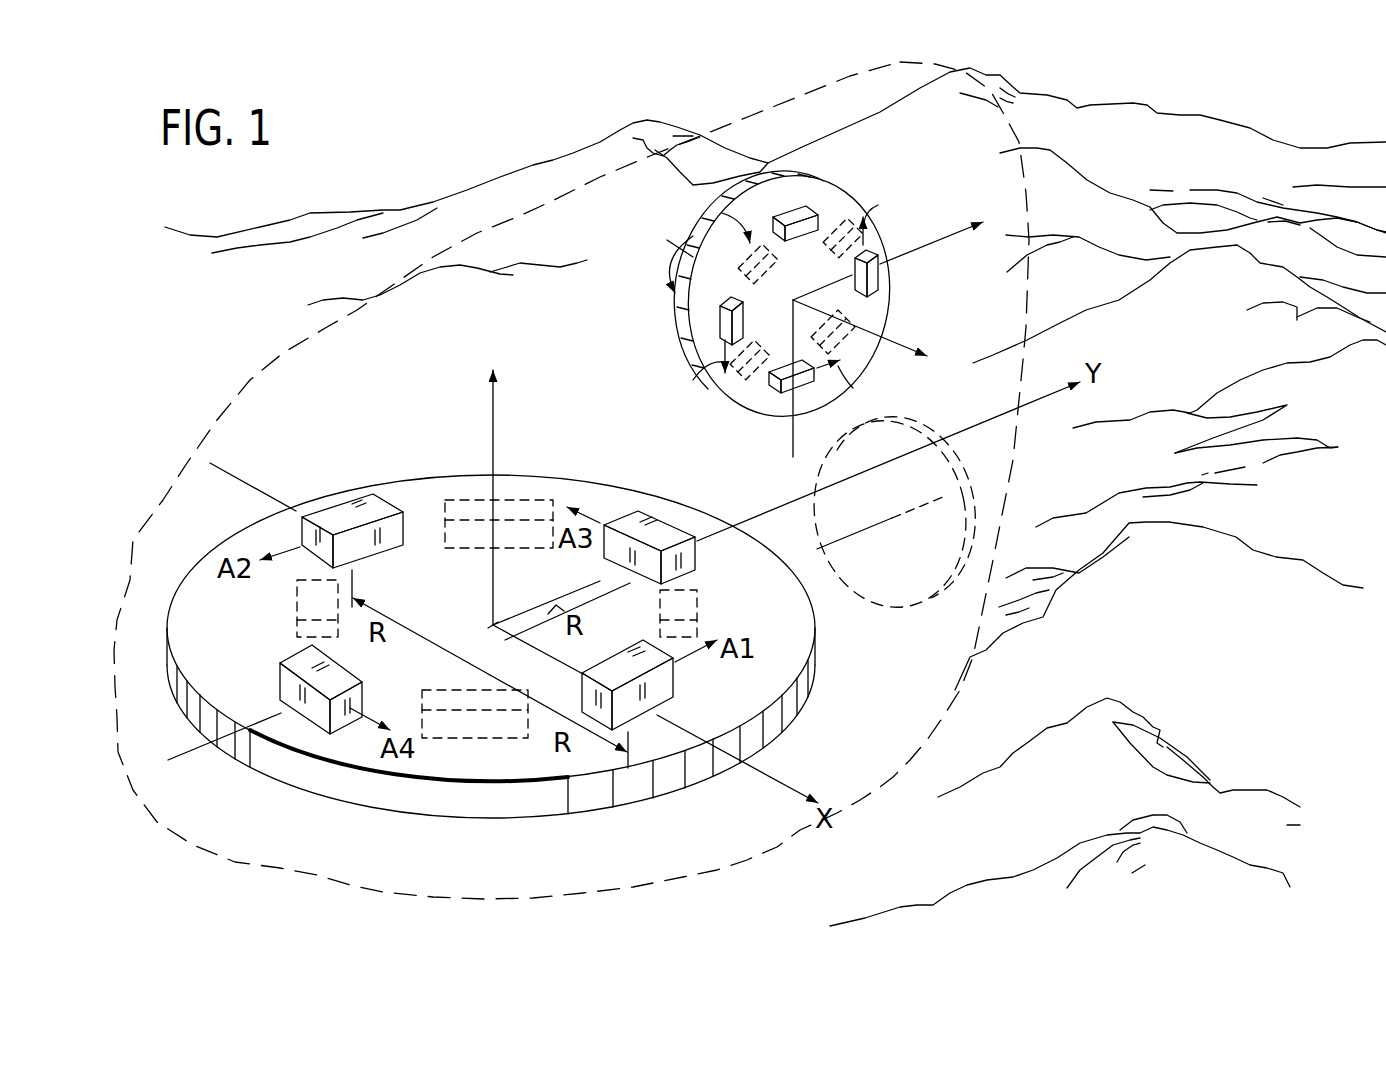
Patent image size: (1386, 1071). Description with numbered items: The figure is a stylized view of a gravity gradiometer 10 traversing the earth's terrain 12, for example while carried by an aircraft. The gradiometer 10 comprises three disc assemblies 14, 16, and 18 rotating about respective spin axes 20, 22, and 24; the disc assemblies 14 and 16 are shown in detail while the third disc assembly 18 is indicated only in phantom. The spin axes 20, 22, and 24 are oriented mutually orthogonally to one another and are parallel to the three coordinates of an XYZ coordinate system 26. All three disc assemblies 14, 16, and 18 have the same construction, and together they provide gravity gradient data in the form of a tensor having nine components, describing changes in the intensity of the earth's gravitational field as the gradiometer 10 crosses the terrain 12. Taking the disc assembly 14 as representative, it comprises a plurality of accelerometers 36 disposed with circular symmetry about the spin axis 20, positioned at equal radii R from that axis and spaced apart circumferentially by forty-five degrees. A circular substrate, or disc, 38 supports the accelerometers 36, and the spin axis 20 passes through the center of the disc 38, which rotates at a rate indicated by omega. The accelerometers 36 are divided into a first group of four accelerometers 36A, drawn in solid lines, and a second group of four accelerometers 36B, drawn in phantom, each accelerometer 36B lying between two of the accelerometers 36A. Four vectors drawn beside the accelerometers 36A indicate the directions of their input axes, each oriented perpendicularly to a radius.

The gravity gradiometer 10 is at (300, 876).
The earth's terrain 12 is at (1190, 660).
The disc assembly 14 is at (548, 818).
The disc assembly 16 is at (769, 413).
The disc assembly 18 is at (932, 613).
The spin axis 20 is at (493, 447).
The spin axis 22 is at (905, 369).
The spin axis 24 is at (847, 538).
The XYZ coordinate system 26 is at (493, 623).
The accelerometers 36 is at (357, 492).
The first group of accelerometers 36A is at (637, 512).
The second group of accelerometers 36B is at (688, 630).
The circular substrate or disc 38 is at (408, 807).